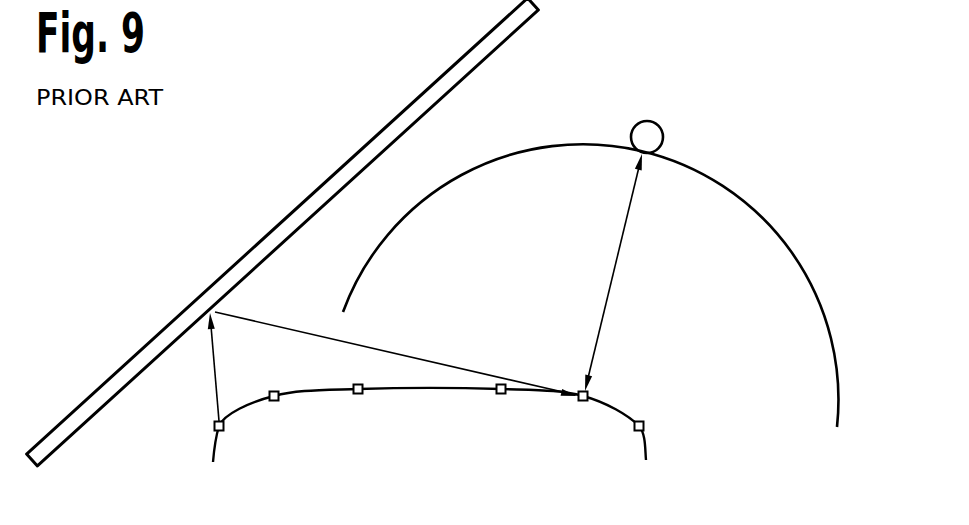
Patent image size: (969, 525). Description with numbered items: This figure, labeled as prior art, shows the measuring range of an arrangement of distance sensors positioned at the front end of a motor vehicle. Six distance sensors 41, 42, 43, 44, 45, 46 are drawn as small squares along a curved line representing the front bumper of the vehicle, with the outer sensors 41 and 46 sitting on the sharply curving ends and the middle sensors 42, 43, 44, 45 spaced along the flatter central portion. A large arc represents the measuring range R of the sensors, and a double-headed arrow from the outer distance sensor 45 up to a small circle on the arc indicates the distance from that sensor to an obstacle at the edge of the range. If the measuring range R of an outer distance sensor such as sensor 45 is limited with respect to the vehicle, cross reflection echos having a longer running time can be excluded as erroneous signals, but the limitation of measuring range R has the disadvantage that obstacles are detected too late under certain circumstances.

The measuring range R is at (750, 206).
The distance sensor 41 is at (235, 444).
The distance sensor 42 is at (288, 417).
The distance sensor 43 is at (369, 410).
The distance sensor 44 is at (505, 413).
The distance sensor 45 is at (583, 420).
The distance sensor 46 is at (630, 444).